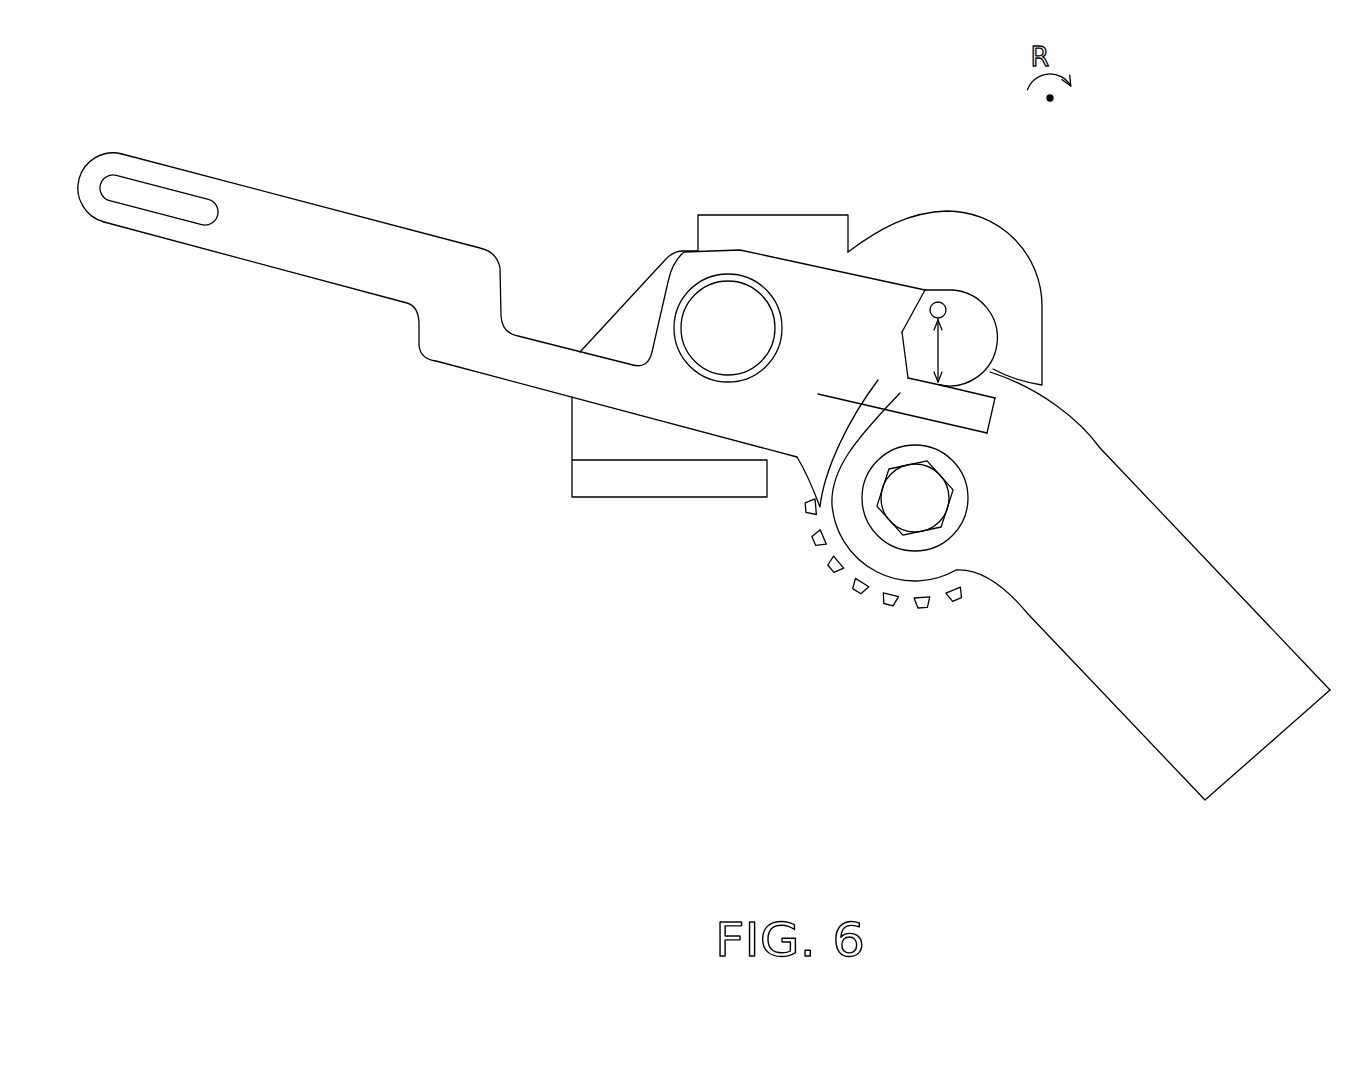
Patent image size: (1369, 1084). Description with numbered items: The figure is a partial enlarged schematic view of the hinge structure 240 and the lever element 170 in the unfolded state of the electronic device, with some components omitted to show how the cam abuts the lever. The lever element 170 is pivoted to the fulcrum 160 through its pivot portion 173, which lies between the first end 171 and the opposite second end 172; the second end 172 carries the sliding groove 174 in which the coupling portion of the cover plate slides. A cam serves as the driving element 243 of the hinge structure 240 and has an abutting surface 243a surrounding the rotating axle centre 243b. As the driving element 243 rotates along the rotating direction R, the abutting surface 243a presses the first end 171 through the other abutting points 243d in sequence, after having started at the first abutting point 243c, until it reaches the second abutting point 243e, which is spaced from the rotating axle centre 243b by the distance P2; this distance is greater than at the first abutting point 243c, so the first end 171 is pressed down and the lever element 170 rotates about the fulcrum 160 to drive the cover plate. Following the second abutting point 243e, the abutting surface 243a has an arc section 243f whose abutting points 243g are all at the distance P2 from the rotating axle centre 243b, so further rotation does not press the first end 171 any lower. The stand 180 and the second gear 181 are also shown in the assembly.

The fulcrum 160 is at (726, 220).
The lever element 170 is at (379, 230).
The first end 171 is at (822, 510).
The second end 172 is at (150, 232).
The pivot portion 173 is at (738, 262).
The sliding groove 174 is at (171, 178).
The stand 180 is at (1175, 745).
The second gear 181 is at (857, 592).
The hinge structure 240 is at (1066, 302).
The driving element 243 is at (966, 305).
The abutting surface 243a is at (900, 348).
The rotating axle centre 243b is at (938, 302).
The first abutting point 243c is at (922, 289).
The other abutting points 243d is at (818, 394).
The second abutting point 243e is at (988, 426).
The arc section 243f is at (1000, 328).
The abutting points 243g is at (997, 360).
The distance P2 is at (1042, 385).